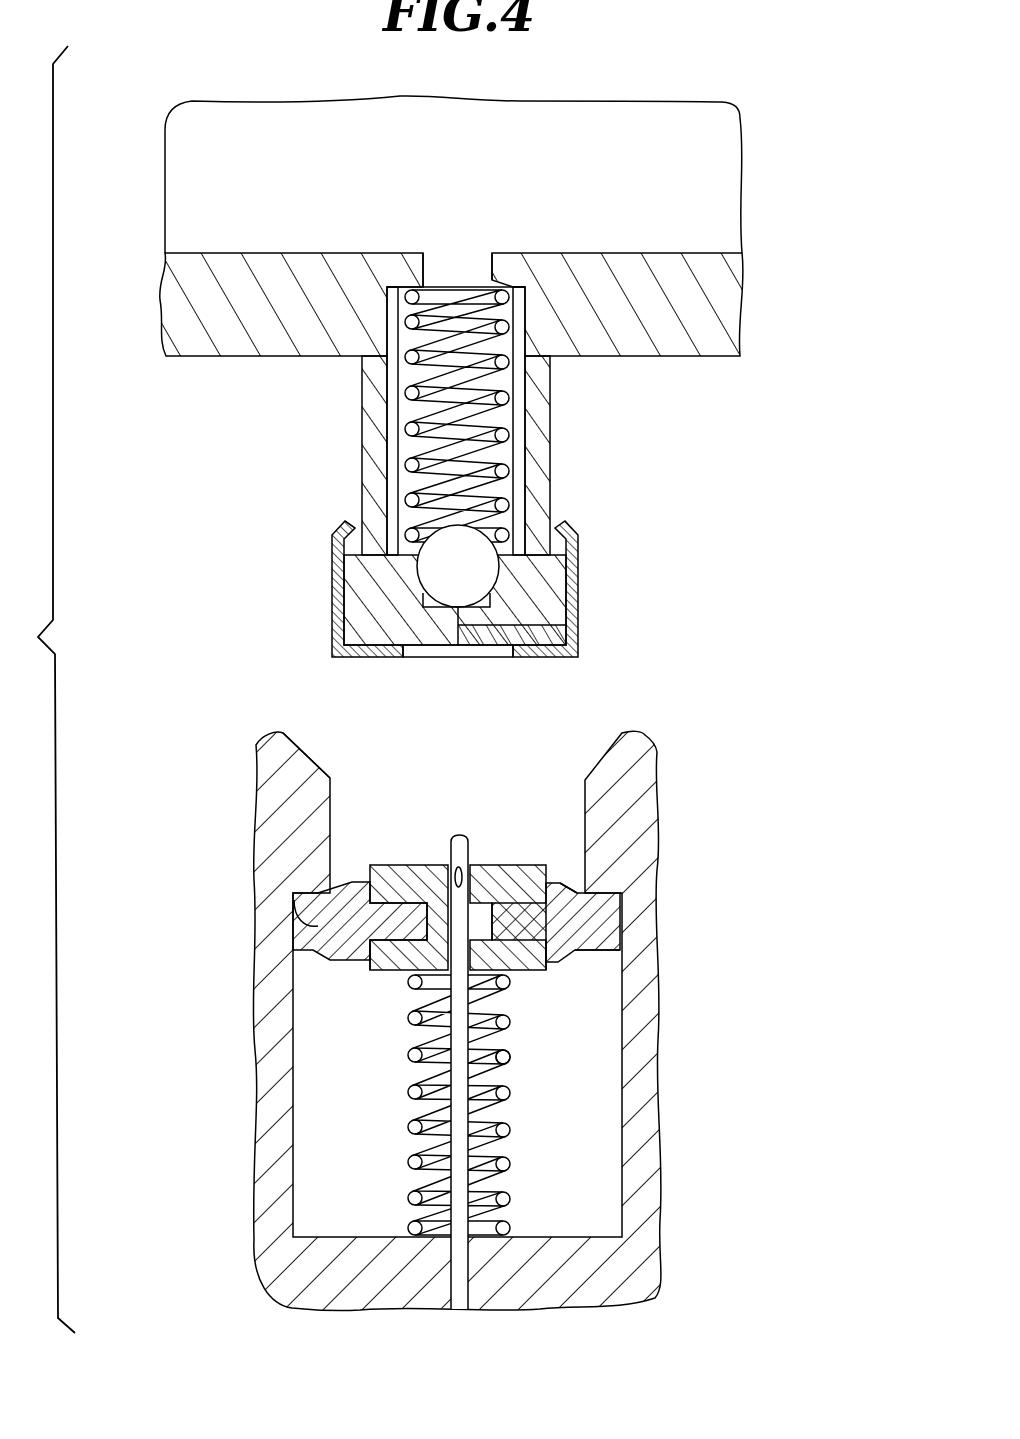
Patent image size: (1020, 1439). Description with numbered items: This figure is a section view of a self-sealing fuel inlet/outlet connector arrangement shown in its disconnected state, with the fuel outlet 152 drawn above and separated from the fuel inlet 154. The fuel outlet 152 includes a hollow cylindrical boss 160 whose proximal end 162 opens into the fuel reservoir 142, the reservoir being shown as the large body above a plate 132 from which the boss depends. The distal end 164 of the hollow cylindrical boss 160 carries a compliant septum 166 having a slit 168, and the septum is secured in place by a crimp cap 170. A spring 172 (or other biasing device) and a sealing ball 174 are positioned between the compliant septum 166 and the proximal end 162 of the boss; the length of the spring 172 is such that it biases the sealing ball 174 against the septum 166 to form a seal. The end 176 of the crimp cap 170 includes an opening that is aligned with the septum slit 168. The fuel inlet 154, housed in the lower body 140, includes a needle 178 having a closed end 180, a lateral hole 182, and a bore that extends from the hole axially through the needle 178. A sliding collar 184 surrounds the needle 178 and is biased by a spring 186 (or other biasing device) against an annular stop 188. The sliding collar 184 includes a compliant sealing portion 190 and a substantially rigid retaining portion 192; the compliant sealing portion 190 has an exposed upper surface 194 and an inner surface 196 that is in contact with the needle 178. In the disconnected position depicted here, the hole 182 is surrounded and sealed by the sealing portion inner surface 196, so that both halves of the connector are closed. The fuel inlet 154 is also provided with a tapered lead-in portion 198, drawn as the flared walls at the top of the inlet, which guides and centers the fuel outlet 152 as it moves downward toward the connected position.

The valve plate 132 is at (745, 272).
The housing 140 is at (643, 1162).
The fuel reservoir 142 is at (688, 128).
The fuel outlet 152 is at (504, 441).
The fuel inlet 154 is at (514, 1040).
The hollow cylindrical boss 160 is at (362, 386).
The proximal end 162 is at (505, 262).
The distal end 164 is at (547, 532).
The compliant septum 166 is at (385, 576).
The slit 168 is at (490, 625).
The crimp cap 170 is at (573, 537).
The spring 172 is at (443, 298).
The sealing ball 174 is at (488, 585).
The end of the crimp cap 176 is at (547, 657).
The needle 178 is at (460, 1120).
The closed end 180 is at (458, 833).
The lateral hole 182 is at (447, 867).
The sliding collar 184 is at (612, 871).
The spring 186 is at (506, 1058).
The annular stop 188 is at (300, 931).
The compliant sealing portion 190 is at (545, 968).
The substantially rigid retaining portion 192 is at (600, 950).
The exposed upper surface 194 is at (498, 868).
The inner surface 196 is at (445, 940).
The tapered lead-in portion 198 is at (312, 758).